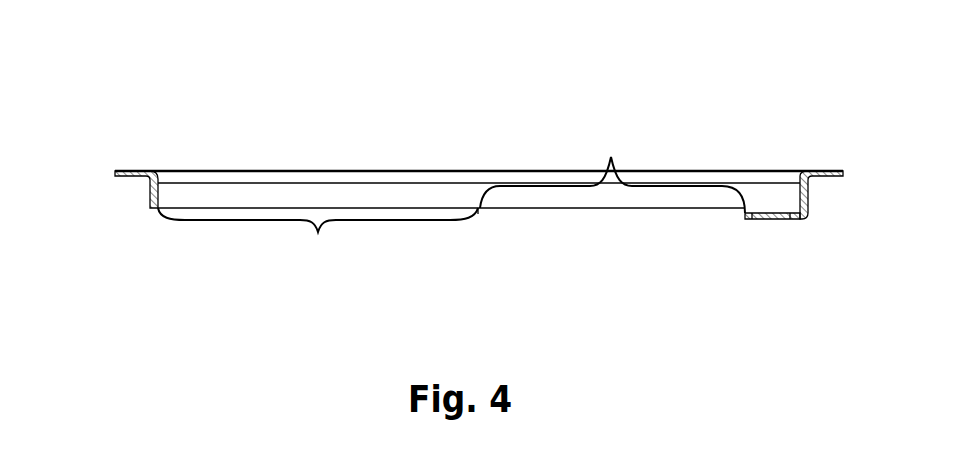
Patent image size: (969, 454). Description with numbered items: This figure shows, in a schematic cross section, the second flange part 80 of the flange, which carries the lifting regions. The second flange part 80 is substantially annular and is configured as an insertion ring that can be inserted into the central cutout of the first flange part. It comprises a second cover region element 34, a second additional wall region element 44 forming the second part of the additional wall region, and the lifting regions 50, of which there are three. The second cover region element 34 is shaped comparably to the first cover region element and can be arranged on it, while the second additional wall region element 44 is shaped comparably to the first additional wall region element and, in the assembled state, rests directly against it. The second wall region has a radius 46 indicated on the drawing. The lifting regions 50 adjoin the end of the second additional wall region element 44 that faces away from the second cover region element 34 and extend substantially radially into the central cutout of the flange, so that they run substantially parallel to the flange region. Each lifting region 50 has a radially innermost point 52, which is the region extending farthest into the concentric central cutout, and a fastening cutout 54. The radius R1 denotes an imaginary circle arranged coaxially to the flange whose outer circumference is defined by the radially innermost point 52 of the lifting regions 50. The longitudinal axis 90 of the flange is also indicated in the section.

The second flange part 80 is at (189, 106).
The second cover region element 34 is at (118, 177).
The second additional wall region element 44 is at (371, 200).
The radius of the second wall region 46 is at (318, 236).
The longitudinal axis 90 is at (480, 169).
The radius of an imaginary circle R1 is at (612, 170).
The lifting region 50 is at (755, 185).
The radially innermost point of the lifting region 52 is at (748, 216).
The fastening cutout 54 is at (776, 219).